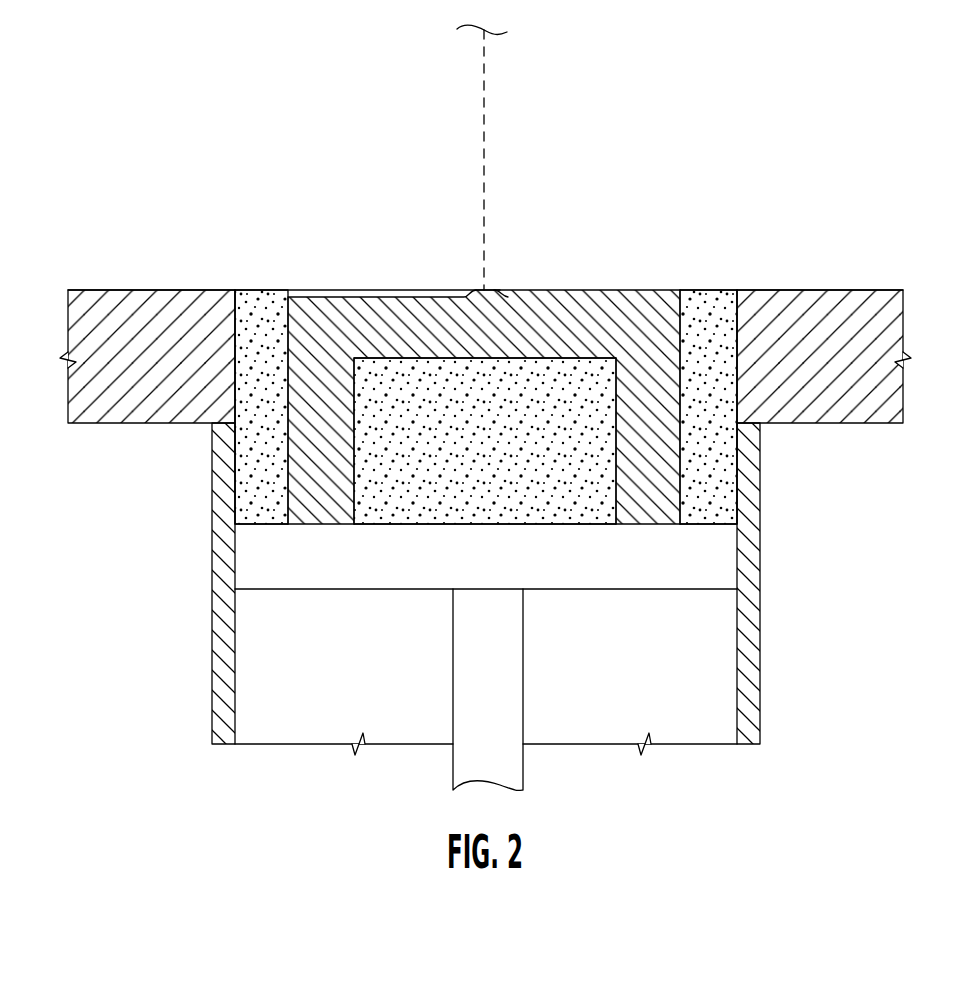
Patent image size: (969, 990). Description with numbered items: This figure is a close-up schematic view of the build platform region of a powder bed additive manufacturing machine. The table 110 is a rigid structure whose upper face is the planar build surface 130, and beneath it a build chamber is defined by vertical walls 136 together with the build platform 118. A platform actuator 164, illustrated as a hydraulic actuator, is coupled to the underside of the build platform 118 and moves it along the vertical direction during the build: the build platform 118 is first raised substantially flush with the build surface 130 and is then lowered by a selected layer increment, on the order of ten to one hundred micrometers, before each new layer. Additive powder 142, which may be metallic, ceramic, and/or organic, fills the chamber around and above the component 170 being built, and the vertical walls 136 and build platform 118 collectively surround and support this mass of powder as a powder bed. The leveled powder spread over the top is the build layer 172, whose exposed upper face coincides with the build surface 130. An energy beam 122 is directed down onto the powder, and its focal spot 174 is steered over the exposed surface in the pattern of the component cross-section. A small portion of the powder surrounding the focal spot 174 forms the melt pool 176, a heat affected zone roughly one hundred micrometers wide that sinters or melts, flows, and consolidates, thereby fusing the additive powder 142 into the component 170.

The table 110 is at (92, 373).
The build platform 118 is at (495, 568).
The energy beam 122 is at (482, 69).
The planar build surface 130 is at (82, 290).
The vertical walls 136 is at (750, 563).
The additive powder 142 is at (280, 450).
The platform actuator 164 is at (513, 684).
The component 170 is at (666, 290).
The build layer 172 is at (330, 296).
The focal spot 174 is at (483, 289).
The melt pool 176 is at (478, 296).